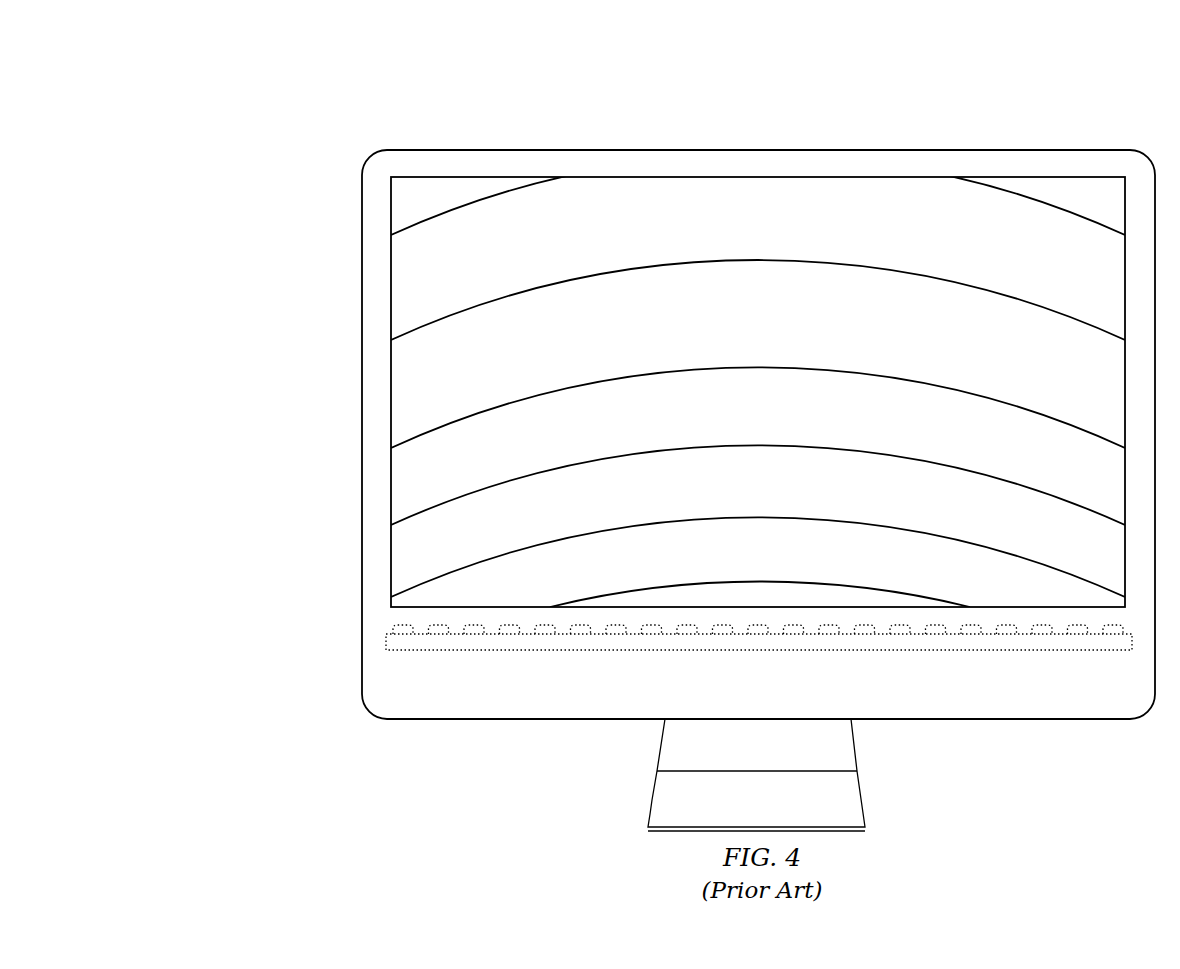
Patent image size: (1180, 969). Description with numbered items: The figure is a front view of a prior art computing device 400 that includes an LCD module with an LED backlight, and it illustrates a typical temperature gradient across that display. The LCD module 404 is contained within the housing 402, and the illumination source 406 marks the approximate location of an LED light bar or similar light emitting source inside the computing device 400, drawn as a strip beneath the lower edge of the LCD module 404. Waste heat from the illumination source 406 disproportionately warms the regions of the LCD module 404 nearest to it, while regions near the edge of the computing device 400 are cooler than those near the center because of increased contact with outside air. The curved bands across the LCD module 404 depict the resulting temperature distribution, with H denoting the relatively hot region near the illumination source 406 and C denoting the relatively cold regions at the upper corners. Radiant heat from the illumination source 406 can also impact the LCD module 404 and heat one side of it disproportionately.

The computing device 400 is at (305, 83).
The housing 402 is at (362, 299).
The LCD module 404 is at (390, 395).
The illumination source 406 is at (386, 642).